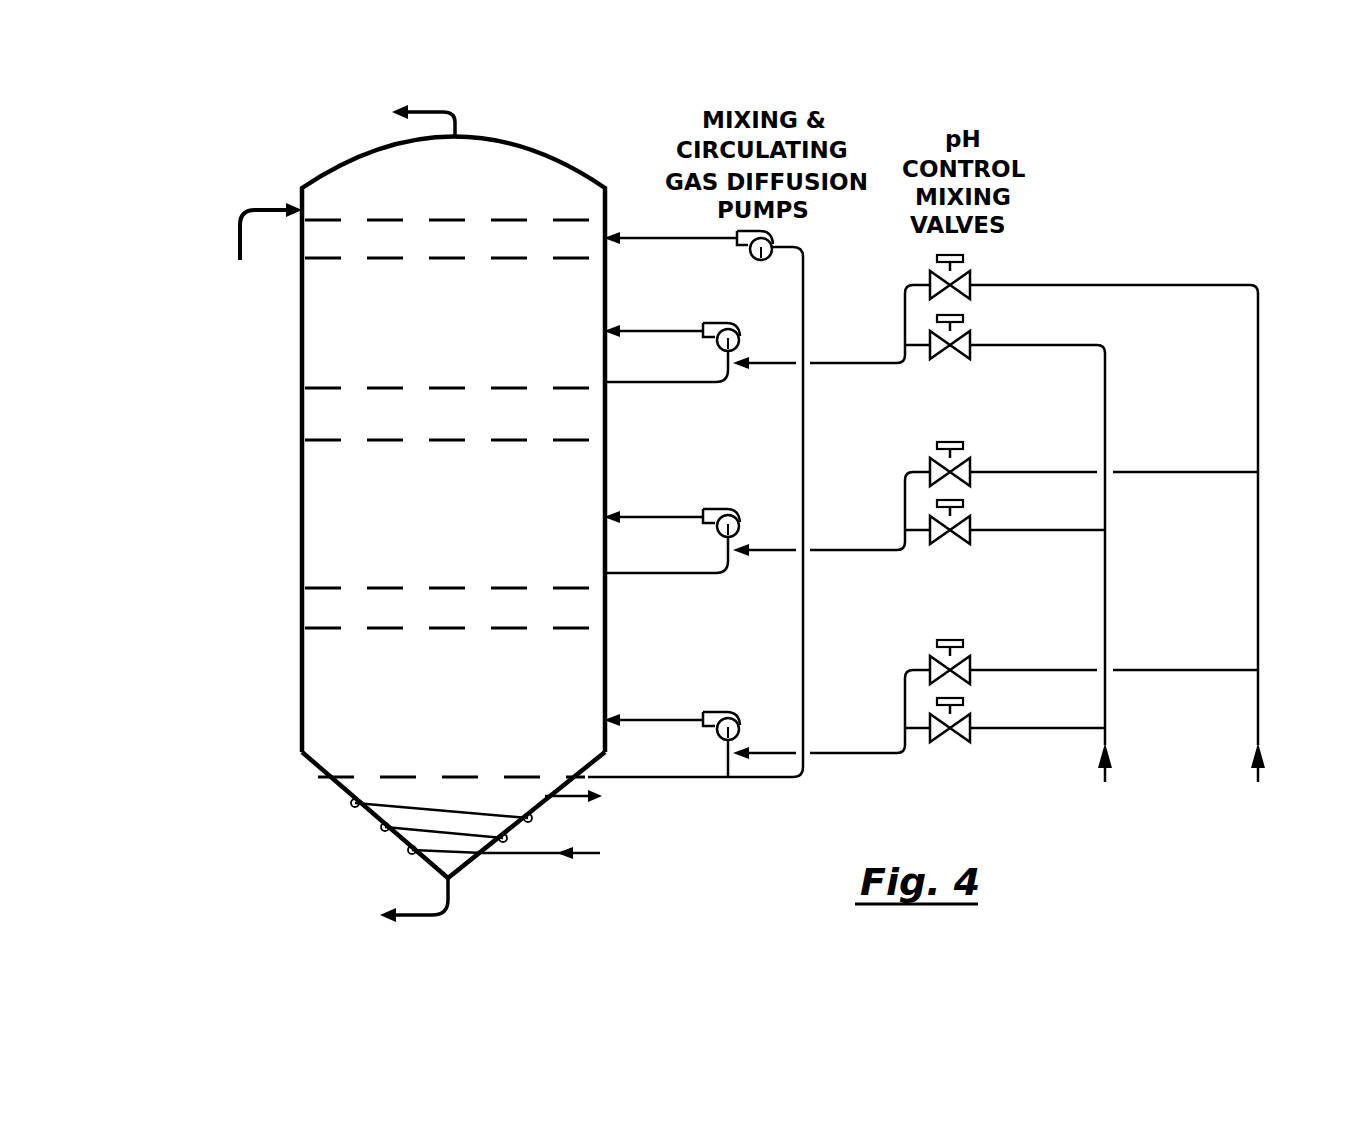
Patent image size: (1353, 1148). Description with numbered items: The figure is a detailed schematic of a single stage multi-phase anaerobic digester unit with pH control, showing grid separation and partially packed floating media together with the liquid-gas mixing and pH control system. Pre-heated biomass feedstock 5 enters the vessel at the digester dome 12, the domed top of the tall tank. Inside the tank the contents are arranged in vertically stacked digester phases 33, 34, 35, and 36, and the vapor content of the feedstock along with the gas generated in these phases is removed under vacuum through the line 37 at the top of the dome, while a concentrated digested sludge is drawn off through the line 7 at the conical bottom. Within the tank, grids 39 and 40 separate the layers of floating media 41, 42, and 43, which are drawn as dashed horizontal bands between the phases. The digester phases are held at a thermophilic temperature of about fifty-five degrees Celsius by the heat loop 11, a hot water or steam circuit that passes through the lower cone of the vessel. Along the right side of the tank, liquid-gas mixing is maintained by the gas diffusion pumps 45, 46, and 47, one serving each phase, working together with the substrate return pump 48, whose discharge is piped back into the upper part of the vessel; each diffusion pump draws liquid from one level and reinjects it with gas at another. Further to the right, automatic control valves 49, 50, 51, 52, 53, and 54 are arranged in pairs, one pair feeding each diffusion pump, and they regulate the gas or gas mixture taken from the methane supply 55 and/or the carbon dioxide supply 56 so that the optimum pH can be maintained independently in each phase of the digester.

The pre-heated biomass feedstock 5 is at (243, 218).
The line 7 is at (449, 917).
The heat loop 11 is at (597, 860).
The digester dome 12 is at (508, 172).
The digester phase 33 is at (340, 353).
The digester phase 34 is at (338, 540).
The digester phase 35 is at (342, 740).
The digester phase 36 is at (413, 818).
The line 37 is at (447, 105).
The grid 39 is at (560, 392).
The grid 40 is at (558, 590).
The floating media 41 is at (567, 250).
The floating media 42 is at (570, 430).
The floating media 43 is at (565, 620).
The gas diffusion pump 45 is at (742, 323).
The gas diffusion pump 46 is at (742, 508).
The gas diffusion pump 47 is at (747, 713).
The substrate return pump 48 is at (780, 242).
The automatic control valve 49 is at (975, 275).
The automatic control valve 50 is at (975, 330).
The automatic control valve 51 is at (975, 462).
The automatic control valve 52 is at (975, 517).
The automatic control valve 53 is at (975, 658).
The automatic control valve 54 is at (975, 717).
The methane supply 55 is at (1092, 755).
The carbon dioxide supply 56 is at (1250, 752).